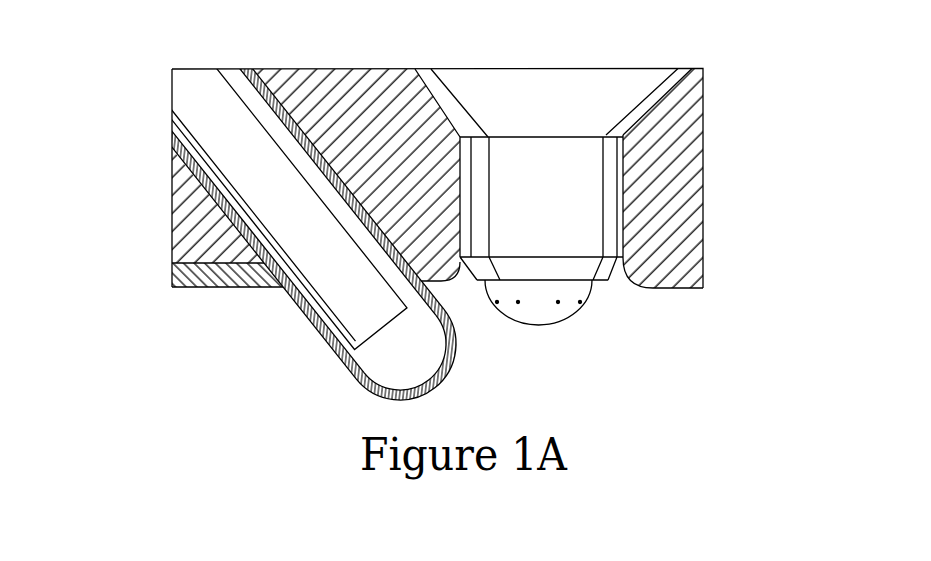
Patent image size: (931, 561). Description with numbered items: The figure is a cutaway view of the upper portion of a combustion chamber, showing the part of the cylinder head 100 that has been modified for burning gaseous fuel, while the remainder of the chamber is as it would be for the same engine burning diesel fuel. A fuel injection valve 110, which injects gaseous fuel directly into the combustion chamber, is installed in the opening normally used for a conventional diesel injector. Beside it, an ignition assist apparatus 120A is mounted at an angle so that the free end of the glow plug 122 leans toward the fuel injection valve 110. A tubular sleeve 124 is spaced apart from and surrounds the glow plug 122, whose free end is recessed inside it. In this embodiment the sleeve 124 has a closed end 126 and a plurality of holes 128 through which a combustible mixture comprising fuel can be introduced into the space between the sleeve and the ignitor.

The cylinder head 100 is at (307, 88).
The fuel injection valve 110 is at (560, 208).
The ignition assist apparatus 120A is at (319, 237).
The glow plug 122 is at (265, 183).
The sleeve 124 is at (303, 305).
The closed end 126 is at (437, 383).
The holes 128 is at (437, 310).